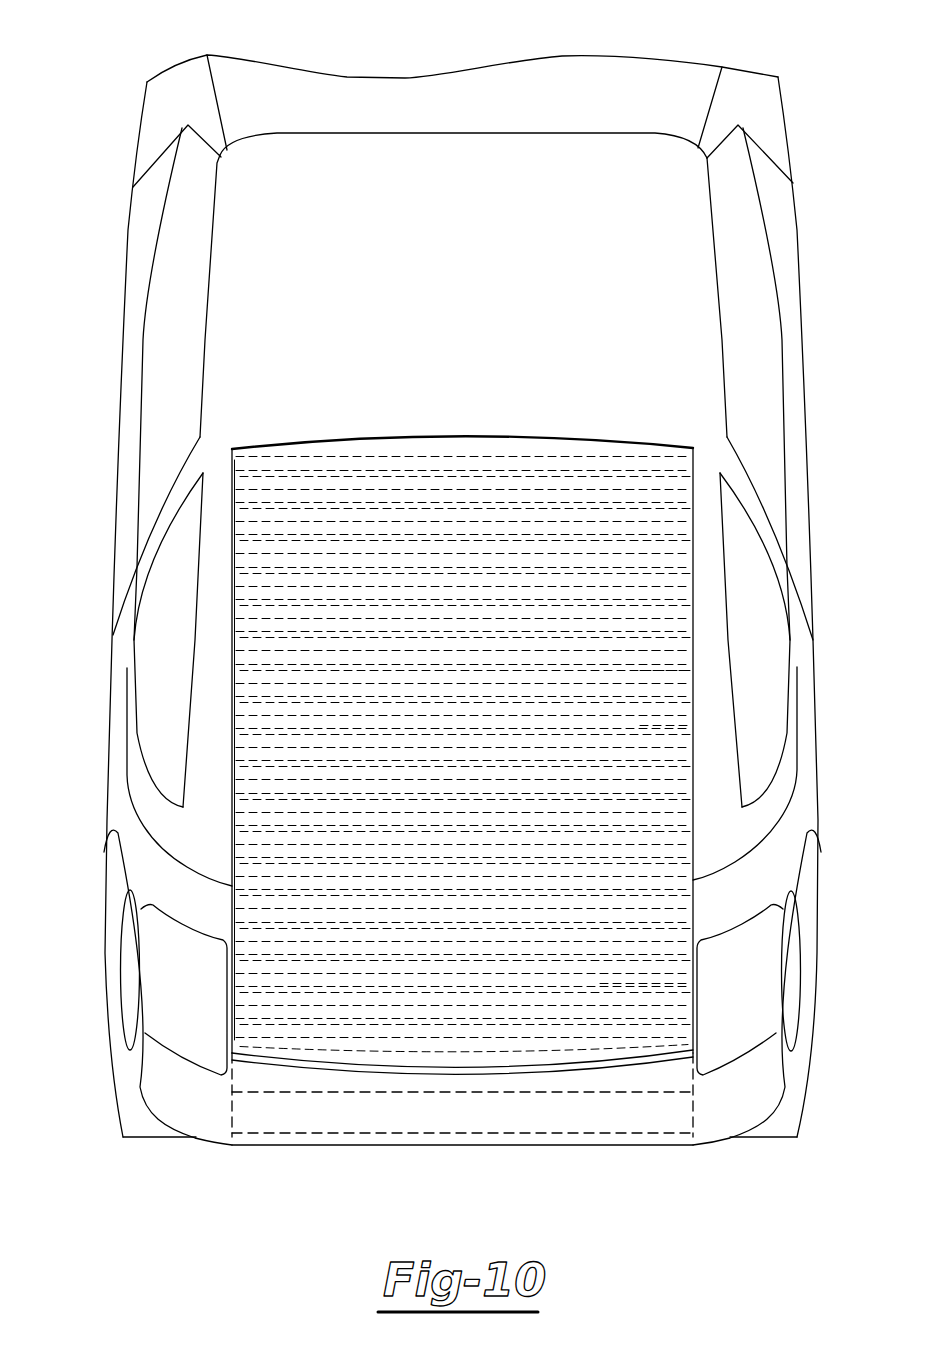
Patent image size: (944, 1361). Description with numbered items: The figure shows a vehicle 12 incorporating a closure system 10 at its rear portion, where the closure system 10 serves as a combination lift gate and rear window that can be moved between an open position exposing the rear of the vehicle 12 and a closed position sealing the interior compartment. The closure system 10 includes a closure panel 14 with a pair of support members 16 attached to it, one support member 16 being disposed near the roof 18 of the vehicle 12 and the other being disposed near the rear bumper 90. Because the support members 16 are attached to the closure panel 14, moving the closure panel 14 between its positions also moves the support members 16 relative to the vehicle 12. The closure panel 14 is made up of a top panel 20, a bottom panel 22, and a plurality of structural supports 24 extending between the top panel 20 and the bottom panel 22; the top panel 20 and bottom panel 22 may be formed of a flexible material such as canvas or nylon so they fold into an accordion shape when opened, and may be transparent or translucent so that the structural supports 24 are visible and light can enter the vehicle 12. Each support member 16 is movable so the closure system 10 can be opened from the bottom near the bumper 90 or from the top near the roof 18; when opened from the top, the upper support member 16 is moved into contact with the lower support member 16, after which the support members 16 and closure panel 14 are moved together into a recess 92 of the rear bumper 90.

The closure system 10 is at (637, 497).
The vehicle 12 is at (102, 86).
The closure panel 14 is at (250, 603).
The support members 16 is at (537, 437).
The roof 18 is at (353, 148).
The top panel 20 is at (650, 650).
The bottom panel 22 is at (667, 725).
The structural supports 24 is at (670, 670).
The rear bumper 90 is at (205, 1112).
The recess 92 is at (297, 1118).